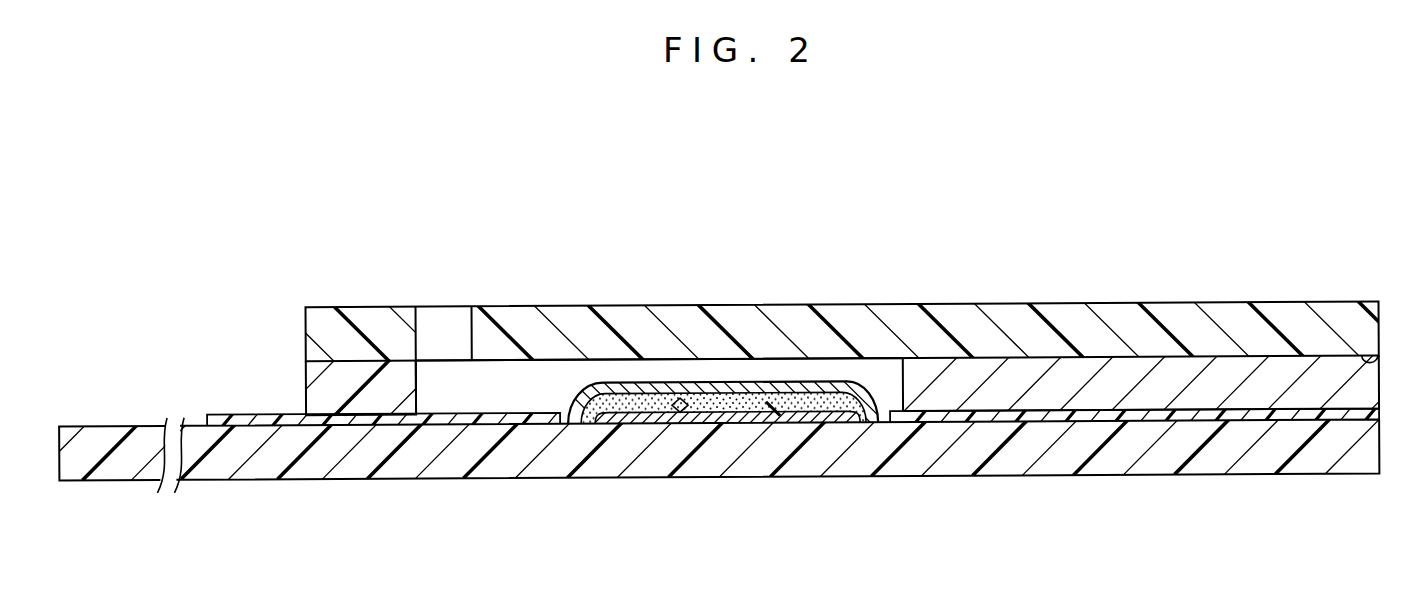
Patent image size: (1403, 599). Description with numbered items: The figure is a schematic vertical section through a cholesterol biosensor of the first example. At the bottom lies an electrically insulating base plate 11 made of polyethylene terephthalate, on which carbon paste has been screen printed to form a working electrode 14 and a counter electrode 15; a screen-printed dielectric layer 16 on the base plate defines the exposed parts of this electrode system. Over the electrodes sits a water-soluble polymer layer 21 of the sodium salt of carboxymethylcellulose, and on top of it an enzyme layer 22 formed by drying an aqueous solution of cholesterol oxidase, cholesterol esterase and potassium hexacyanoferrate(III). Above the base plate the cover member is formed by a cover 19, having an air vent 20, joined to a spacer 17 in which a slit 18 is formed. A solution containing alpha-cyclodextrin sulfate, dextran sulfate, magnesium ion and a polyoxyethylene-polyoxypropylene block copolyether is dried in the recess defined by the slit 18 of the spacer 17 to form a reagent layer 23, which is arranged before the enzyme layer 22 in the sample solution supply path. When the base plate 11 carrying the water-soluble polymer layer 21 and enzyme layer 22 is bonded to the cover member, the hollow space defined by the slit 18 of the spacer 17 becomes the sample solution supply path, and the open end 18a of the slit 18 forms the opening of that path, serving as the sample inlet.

The base plate 11 is at (517, 455).
The working electrode 14 is at (723, 410).
The counter electrode 15 is at (630, 420).
The dielectric layer 16 is at (432, 418).
The spacer 17 is at (333, 387).
The slit 18 is at (533, 387).
The open end 18a is at (1376, 360).
The cover 19 is at (369, 325).
The air vent 20 is at (447, 325).
The water-soluble polymer layer 21 is at (800, 418).
The enzyme layer 22 is at (777, 387).
The reagent layer 23 is at (1070, 390).